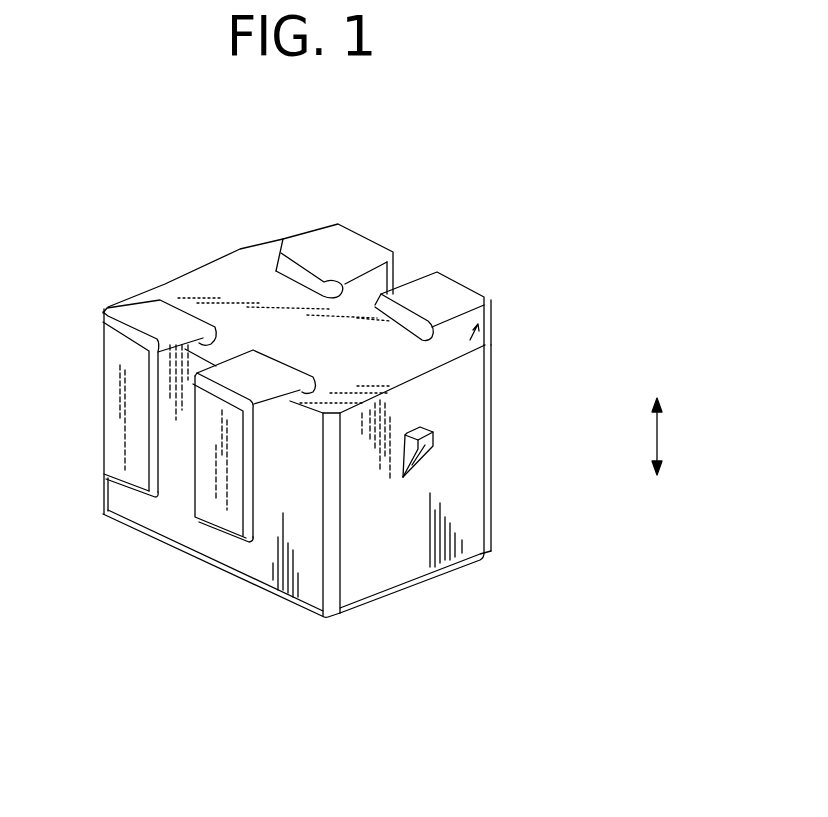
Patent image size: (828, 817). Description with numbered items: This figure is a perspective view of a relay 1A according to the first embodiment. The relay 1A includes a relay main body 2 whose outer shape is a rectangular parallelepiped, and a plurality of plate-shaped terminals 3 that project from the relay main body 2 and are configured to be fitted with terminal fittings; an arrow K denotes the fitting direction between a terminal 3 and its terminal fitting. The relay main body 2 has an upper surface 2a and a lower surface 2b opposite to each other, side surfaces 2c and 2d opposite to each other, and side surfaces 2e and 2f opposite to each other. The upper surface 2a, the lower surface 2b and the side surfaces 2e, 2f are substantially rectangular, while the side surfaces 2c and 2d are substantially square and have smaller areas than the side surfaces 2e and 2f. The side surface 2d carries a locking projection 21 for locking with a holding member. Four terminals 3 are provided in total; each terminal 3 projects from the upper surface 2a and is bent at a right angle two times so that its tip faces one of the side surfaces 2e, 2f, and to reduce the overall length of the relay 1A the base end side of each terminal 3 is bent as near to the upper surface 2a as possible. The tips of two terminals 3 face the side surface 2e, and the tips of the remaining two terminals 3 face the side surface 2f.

The relay 1A is at (574, 140).
The relay main body 2 is at (497, 306).
The upper surface 2a is at (262, 302).
The lower surface 2b is at (299, 604).
The side surface 2c is at (163, 280).
The side surface 2d is at (447, 568).
The side surface 2e is at (250, 560).
The side surface 2f is at (492, 452).
The locking projection 21 is at (440, 438).
The terminal 3 is at (333, 242).
The fitting direction K is at (660, 438).